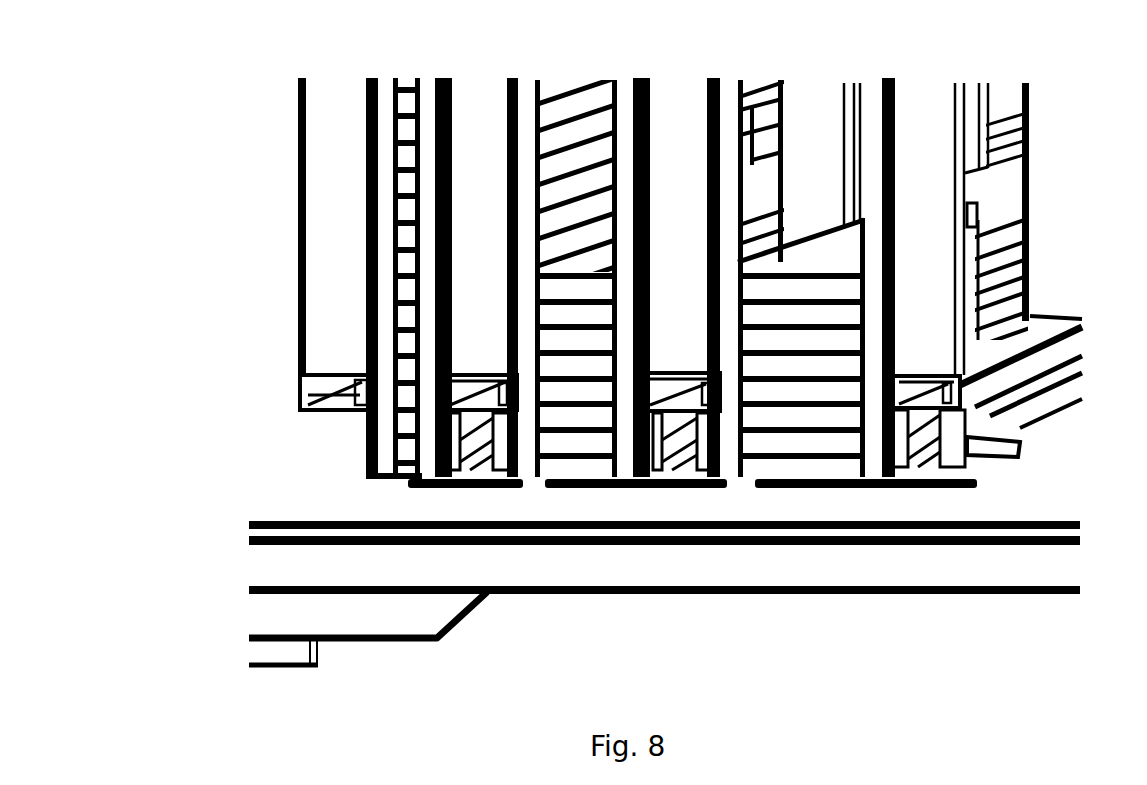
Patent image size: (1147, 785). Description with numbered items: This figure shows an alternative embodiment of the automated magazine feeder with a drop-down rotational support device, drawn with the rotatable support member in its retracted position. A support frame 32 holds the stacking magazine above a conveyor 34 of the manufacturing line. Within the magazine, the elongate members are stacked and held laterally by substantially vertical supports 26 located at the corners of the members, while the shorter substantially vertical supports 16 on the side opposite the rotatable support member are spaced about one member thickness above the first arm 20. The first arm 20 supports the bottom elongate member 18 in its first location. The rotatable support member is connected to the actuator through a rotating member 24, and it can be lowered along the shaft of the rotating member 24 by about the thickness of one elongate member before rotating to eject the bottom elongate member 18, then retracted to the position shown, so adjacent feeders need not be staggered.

The substantially vertical supports 16 is at (410, 440).
The bottom elongate member 18 is at (402, 482).
The first arm 20 is at (478, 475).
The rotating member 24 is at (953, 443).
The substantially vertical supports 26 is at (423, 88).
The support frame 32 is at (340, 92).
The conveyor 34 is at (985, 522).